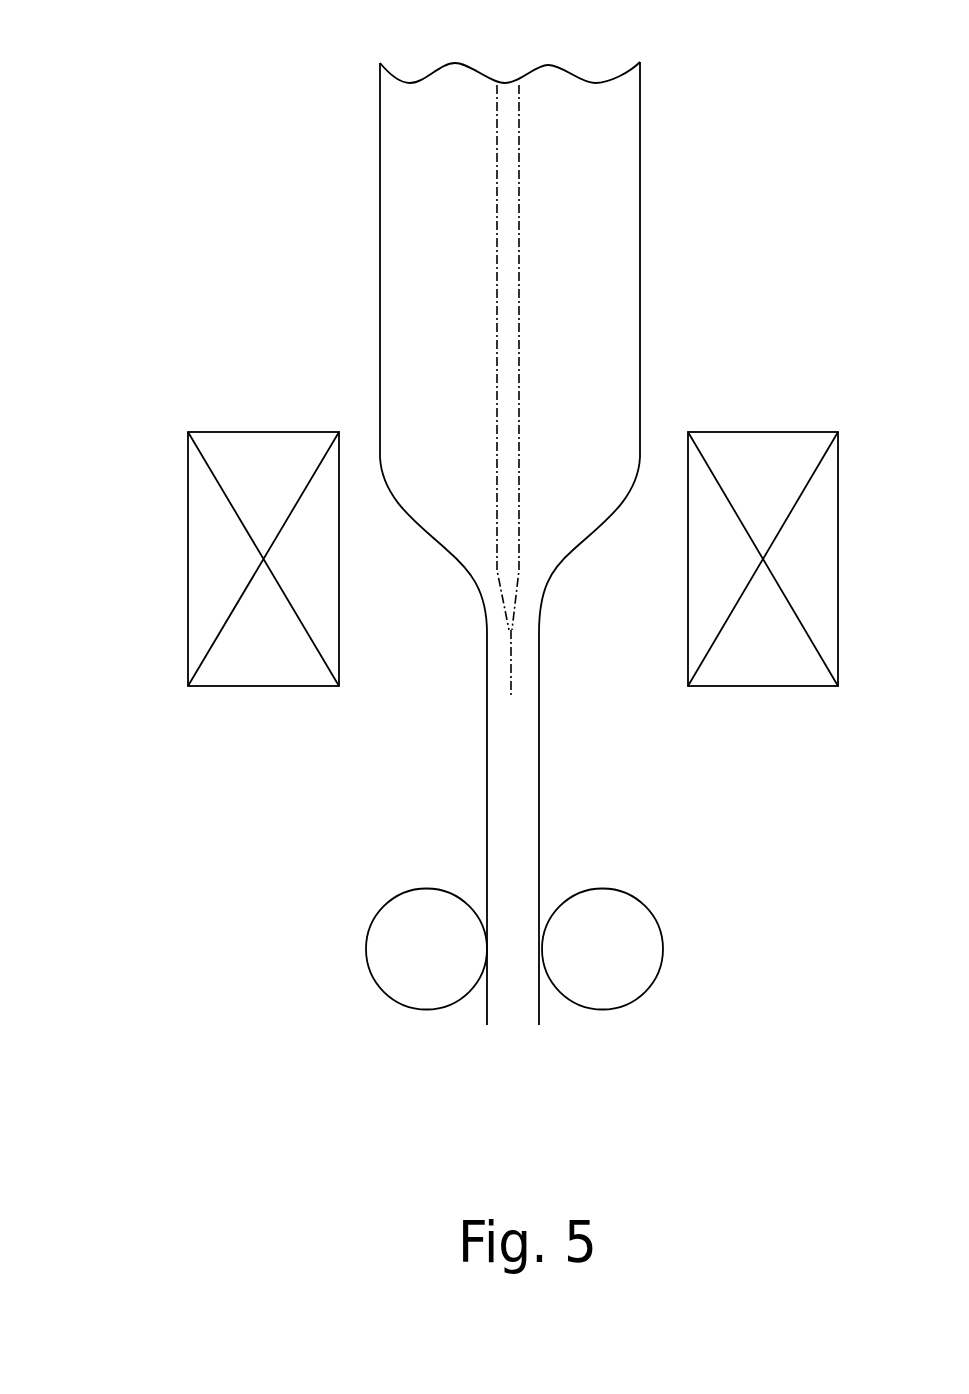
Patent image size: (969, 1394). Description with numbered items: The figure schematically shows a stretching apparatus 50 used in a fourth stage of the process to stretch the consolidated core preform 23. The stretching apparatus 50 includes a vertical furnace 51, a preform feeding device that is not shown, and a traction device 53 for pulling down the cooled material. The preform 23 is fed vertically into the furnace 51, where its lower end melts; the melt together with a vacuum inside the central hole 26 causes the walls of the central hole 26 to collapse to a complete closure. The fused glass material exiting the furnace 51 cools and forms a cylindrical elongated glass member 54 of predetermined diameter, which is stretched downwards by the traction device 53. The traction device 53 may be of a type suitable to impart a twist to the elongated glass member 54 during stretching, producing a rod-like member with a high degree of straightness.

The stretching apparatus 50 is at (222, 158).
The consolidated core preform 23 is at (598, 190).
The central hole 26 is at (516, 330).
The vertical furnace 51 is at (200, 521).
The cylindrical elongated glass member 54 is at (522, 805).
The traction device 53 is at (618, 923).